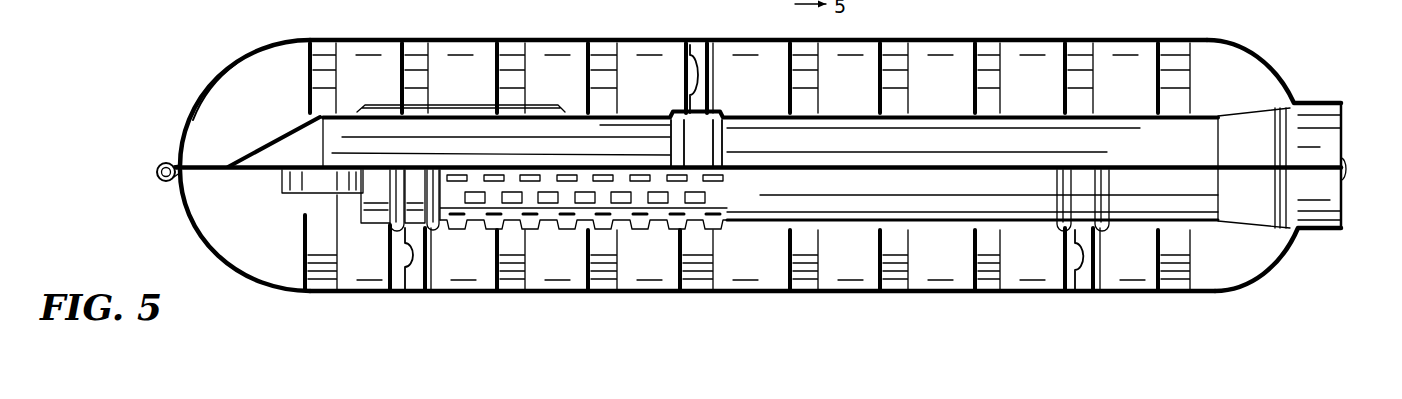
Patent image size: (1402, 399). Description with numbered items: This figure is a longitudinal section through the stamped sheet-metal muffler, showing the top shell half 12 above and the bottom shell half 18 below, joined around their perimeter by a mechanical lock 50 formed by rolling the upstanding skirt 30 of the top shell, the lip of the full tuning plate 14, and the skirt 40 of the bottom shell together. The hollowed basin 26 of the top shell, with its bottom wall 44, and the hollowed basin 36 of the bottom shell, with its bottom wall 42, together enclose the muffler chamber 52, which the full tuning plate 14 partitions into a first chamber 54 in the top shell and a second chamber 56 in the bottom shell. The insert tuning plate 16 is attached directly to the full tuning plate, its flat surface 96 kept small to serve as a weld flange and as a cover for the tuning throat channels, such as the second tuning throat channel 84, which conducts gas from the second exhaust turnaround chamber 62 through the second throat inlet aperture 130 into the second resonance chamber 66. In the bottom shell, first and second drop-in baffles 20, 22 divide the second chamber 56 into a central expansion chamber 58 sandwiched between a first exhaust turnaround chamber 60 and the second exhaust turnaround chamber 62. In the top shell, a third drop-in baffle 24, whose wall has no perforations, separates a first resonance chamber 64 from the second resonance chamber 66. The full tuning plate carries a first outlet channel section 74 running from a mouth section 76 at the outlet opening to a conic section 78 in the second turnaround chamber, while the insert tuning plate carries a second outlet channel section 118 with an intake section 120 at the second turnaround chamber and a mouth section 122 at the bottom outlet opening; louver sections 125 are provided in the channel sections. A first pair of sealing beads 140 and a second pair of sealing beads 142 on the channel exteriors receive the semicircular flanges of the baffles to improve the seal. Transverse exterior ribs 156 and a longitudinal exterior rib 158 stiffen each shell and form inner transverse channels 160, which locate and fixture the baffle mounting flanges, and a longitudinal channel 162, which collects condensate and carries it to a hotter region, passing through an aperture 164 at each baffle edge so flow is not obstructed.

The top shell half 12 is at (208, 82).
The full tuning plate 14 is at (207, 156).
The insert tuning plate 16 is at (221, 180).
The bottom shell half 18 is at (237, 279).
The first drop-in baffle 20 is at (1102, 260).
The second drop-in baffle 22 is at (435, 262).
The third drop-in baffle 24 is at (714, 88).
The hollowed basin 26 is at (240, 70).
The skirt 30 is at (162, 165).
The hollowed basin 36 is at (214, 243).
The skirt 40 is at (176, 185).
The bottom wall 42 is at (834, 265).
The bottom wall 44 is at (846, 50).
The mechanical lock 50 is at (150, 175).
The muffler chamber 52 is at (283, 76).
The first chamber 54 is at (1220, 70).
The second chamber 56 is at (1248, 250).
The central expansion chamber 58 is at (862, 262).
The first exhaust turnaround chamber 60 is at (1215, 262).
The second exhaust turnaround chamber 62 is at (272, 265).
The first resonance chamber 64 is at (1132, 72).
The second resonance chamber 66 is at (226, 124).
The first outlet channel section 74 is at (797, 119).
The mouth section 76 is at (1318, 113).
The conic section 78 is at (280, 137).
The second tuning throat channel 84 is at (440, 109).
The flat surface 96 is at (250, 175).
The second outlet channel section 118 is at (930, 227).
The intake section 120 is at (358, 217).
The mouth section 122 is at (1328, 222).
The louver sections 125 is at (576, 233).
The second throat inlet aperture 130 is at (310, 184).
The first pair of sealing beads 140 is at (392, 230).
The second pair of sealing beads 142 is at (1060, 228).
The transversely extending exterior ribs 156 is at (1092, 0).
The longitudinally extending exterior rib 158 is at (637, 56).
The transversely extending channels 160 is at (808, 243).
The longitudinally extending channel 162 is at (768, 275).
The aperture 164 is at (712, 54).